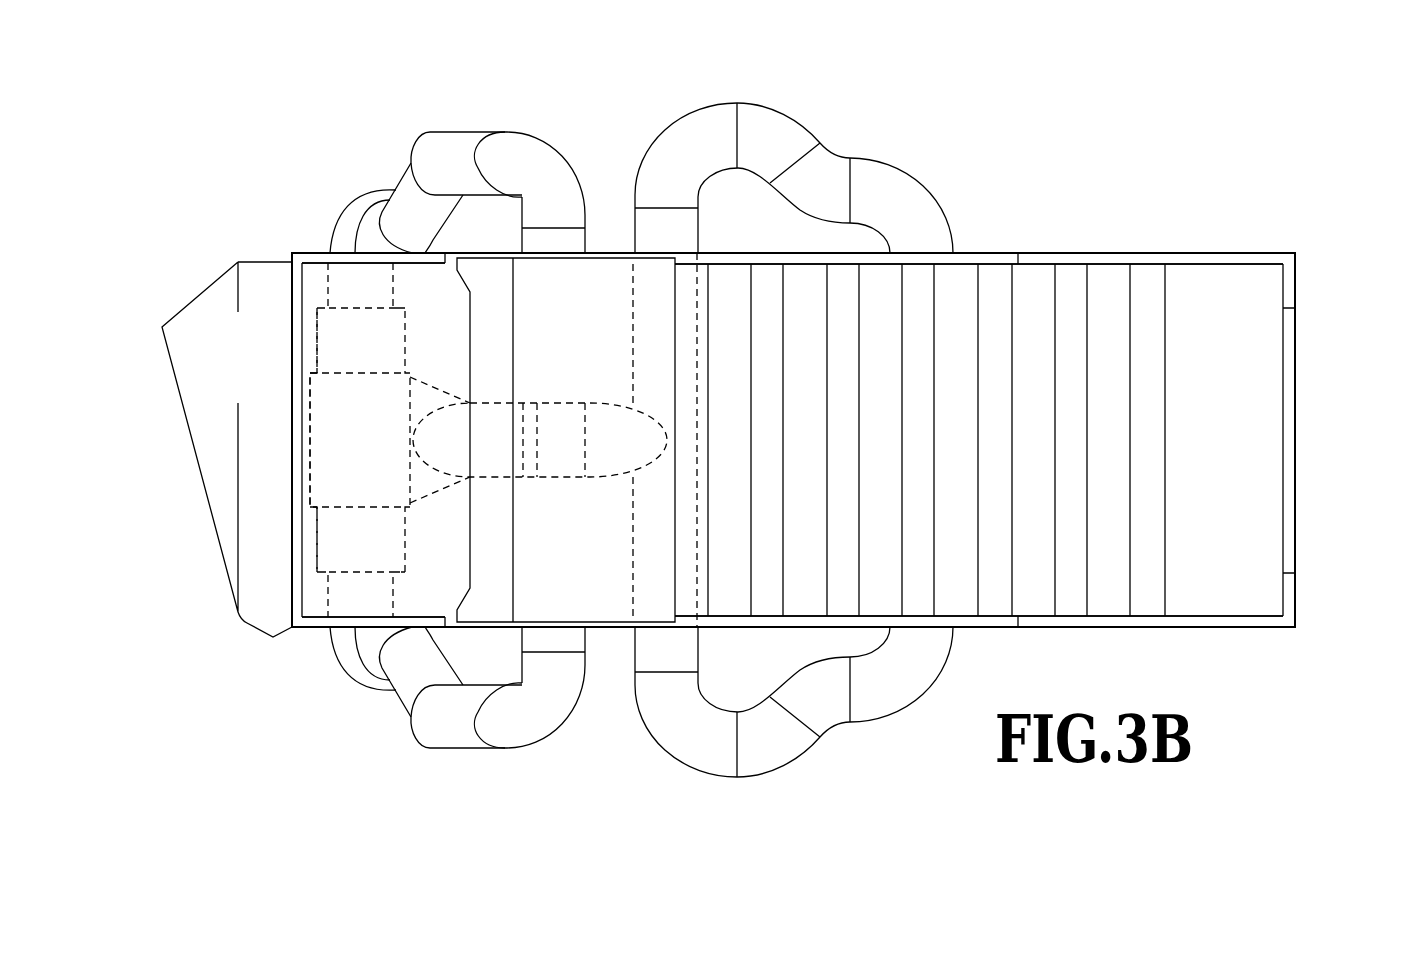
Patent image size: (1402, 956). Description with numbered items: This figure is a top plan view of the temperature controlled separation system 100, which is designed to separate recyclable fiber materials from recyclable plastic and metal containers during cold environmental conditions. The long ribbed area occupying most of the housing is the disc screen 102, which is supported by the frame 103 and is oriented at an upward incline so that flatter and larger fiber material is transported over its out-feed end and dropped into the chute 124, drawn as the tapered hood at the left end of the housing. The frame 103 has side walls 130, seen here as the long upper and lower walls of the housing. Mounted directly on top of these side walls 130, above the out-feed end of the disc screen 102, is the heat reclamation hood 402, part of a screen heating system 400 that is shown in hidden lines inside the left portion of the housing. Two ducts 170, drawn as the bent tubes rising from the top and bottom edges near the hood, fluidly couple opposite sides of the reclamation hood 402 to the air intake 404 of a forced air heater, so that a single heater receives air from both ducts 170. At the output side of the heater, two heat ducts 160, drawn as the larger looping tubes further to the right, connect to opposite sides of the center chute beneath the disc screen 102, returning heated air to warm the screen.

The temperature controlled separation system 100 is at (1183, 203).
The disc screen 102 is at (1185, 412).
The frame 103 is at (1297, 438).
The chute 124 is at (190, 450).
The side walls 130 is at (1048, 253).
The heat ducts 160 is at (857, 158).
The ducts 170 is at (463, 130).
The screen heating system 400 is at (283, 403).
The heat reclamation hood 402 is at (613, 300).
The air intake 404 is at (318, 532).